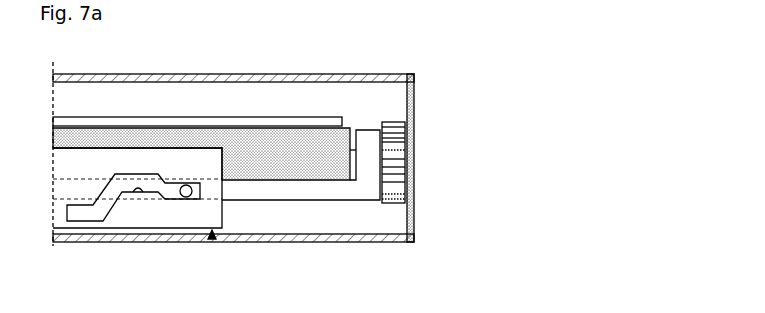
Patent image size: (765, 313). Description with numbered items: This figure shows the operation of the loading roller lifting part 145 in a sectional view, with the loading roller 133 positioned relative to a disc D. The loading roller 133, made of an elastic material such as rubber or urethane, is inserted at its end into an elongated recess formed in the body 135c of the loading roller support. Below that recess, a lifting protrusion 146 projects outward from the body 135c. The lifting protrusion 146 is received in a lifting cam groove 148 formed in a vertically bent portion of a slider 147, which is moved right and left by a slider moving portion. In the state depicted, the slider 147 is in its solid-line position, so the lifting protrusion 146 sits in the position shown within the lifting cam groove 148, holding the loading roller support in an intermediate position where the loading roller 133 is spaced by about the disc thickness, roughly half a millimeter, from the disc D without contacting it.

The disc D is at (212, 117).
The loading roller 133 is at (302, 136).
The body of loading roller support 135c is at (331, 200).
The loading roller lifting part 145 is at (211, 239).
The lifting protrusion 146 is at (186, 199).
The slider 147 is at (73, 228).
The lifting cam groove 148 is at (138, 188).